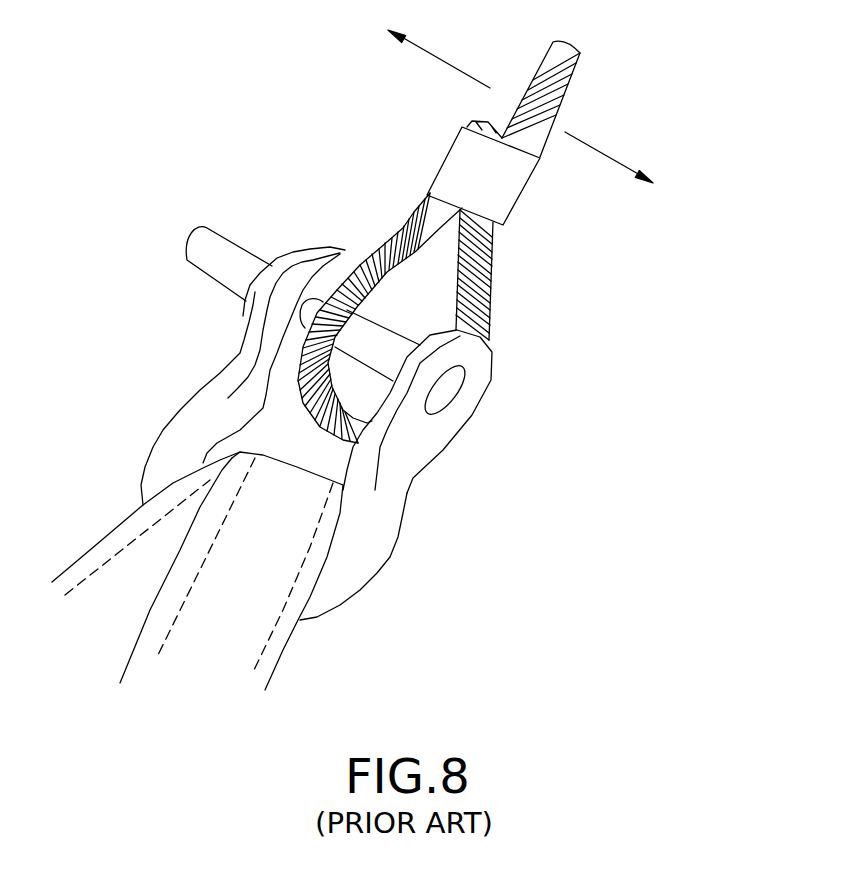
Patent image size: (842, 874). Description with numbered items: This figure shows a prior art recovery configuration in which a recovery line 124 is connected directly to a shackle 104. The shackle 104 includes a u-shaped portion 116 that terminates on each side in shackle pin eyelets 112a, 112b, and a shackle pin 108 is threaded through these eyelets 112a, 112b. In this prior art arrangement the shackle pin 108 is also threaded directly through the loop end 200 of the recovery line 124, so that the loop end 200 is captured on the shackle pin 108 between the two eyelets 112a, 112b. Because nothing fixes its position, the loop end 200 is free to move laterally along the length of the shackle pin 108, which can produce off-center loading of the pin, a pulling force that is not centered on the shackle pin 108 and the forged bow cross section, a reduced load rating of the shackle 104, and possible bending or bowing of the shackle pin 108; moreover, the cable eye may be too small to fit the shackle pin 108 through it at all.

The recovery line 124 is at (568, 77).
The loop end 200 is at (488, 300).
The shackle pin 108 is at (188, 243).
The shackle pin eyelet 112a is at (263, 332).
The shackle pin eyelet 112b is at (433, 410).
The shackle 104 is at (388, 491).
The u-shaped portion 116 is at (338, 592).